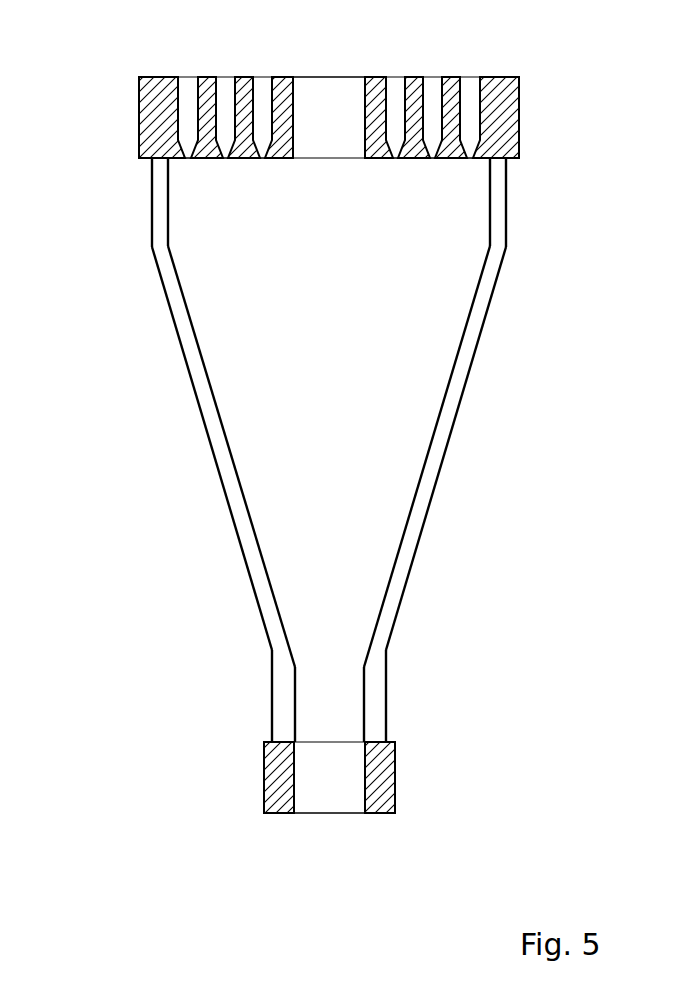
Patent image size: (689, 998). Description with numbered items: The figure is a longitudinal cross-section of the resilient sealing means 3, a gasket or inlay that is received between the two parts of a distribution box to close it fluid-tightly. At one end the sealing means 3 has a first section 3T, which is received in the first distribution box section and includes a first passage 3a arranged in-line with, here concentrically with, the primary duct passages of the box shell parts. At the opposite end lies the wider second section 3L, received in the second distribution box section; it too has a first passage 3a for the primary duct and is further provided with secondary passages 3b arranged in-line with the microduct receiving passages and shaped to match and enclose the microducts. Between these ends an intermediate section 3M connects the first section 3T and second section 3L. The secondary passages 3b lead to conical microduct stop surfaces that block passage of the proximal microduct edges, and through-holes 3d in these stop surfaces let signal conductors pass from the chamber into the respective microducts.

The sealing means 3 is at (274, 451).
The first passage 3a is at (329, 103).
The secondary passages 3b is at (222, 75).
The through-holes 3d is at (432, 160).
The second section 3L is at (128, 219).
The intermediate section 3M is at (186, 423).
The first section 3T is at (250, 780).